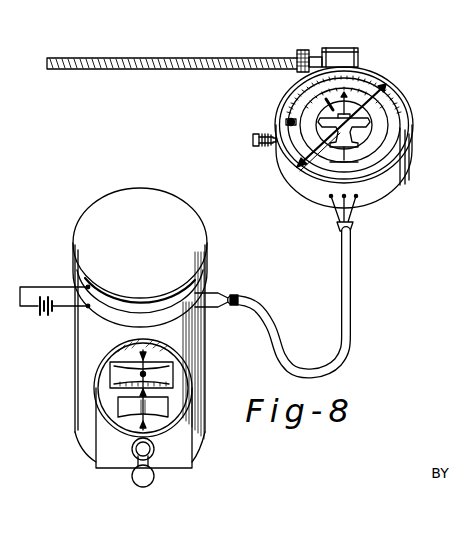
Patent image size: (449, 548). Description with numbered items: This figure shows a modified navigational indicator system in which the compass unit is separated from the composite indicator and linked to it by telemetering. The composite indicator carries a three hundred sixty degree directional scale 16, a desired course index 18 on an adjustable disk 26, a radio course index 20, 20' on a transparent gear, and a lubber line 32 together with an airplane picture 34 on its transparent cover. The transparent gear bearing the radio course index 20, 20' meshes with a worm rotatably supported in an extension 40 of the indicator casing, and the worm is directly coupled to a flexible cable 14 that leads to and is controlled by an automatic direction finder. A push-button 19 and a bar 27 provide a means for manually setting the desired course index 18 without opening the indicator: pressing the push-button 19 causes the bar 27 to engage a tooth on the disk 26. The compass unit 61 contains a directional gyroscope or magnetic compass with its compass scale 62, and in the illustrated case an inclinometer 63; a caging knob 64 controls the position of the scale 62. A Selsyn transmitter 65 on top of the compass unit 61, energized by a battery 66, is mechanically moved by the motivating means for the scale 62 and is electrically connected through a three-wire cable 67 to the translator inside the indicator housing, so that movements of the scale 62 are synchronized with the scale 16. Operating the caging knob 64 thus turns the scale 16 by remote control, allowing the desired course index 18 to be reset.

The flexible cable 14 is at (156, 60).
The extension 40 is at (339, 48).
The directional scale 16 is at (358, 165).
The lubber line 32 is at (368, 118).
The airplane picture 34 is at (358, 138).
The desired course index 18 is at (326, 100).
The radio course index 20 is at (365, 114).
The adjustable disk 26 is at (296, 168).
The radio course index 20' is at (304, 180).
The bar 27 is at (289, 120).
The push-button 19 is at (256, 135).
The transmitter 65 is at (207, 225).
The compass unit 61 is at (74, 367).
The battery 66 is at (42, 312).
The compass scale 62 is at (168, 373).
The inclinometer 63 is at (118, 406).
The caging knob 64 is at (138, 486).
The three-wire cable 67 is at (341, 312).